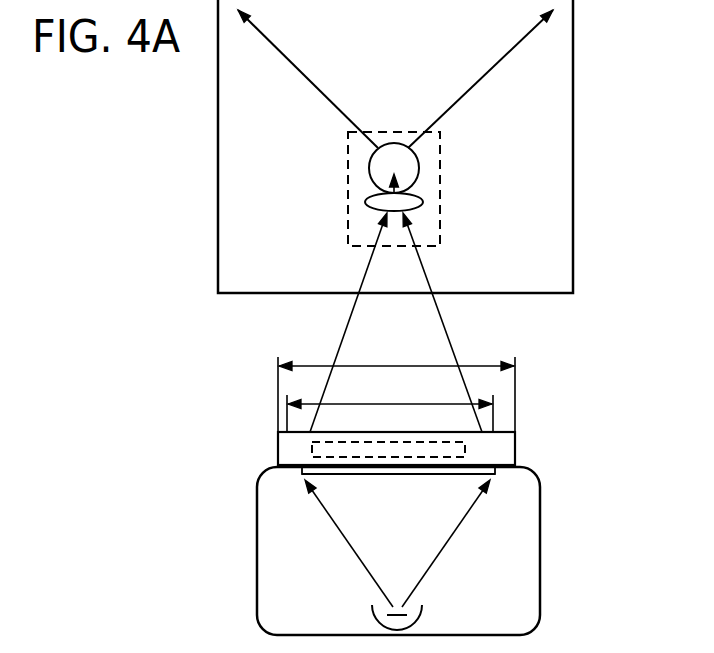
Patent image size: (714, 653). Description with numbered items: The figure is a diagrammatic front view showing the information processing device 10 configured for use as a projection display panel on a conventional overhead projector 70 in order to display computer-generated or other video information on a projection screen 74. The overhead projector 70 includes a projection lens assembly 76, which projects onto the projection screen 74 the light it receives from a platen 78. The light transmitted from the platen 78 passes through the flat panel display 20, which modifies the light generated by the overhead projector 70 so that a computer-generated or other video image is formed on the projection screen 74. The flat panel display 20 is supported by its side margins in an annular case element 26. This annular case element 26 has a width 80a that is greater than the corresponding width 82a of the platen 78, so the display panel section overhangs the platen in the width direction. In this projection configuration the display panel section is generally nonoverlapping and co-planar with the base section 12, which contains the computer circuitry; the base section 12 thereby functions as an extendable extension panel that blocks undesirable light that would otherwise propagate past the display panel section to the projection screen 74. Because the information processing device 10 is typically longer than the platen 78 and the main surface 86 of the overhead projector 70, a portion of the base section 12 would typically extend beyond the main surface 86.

The projection screen 74 is at (532, 295).
The projection lens assembly 76 is at (410, 207).
The width of annular case element 80a is at (395, 365).
The width of platen 82a is at (410, 402).
The information processing device 10 is at (520, 436).
The base section 12 is at (517, 450).
The flat panel display 20 is at (375, 442).
The annular case element 26 is at (295, 462).
The main surface 86 is at (498, 468).
The platen 78 is at (373, 477).
The overhead projector 70 is at (544, 547).